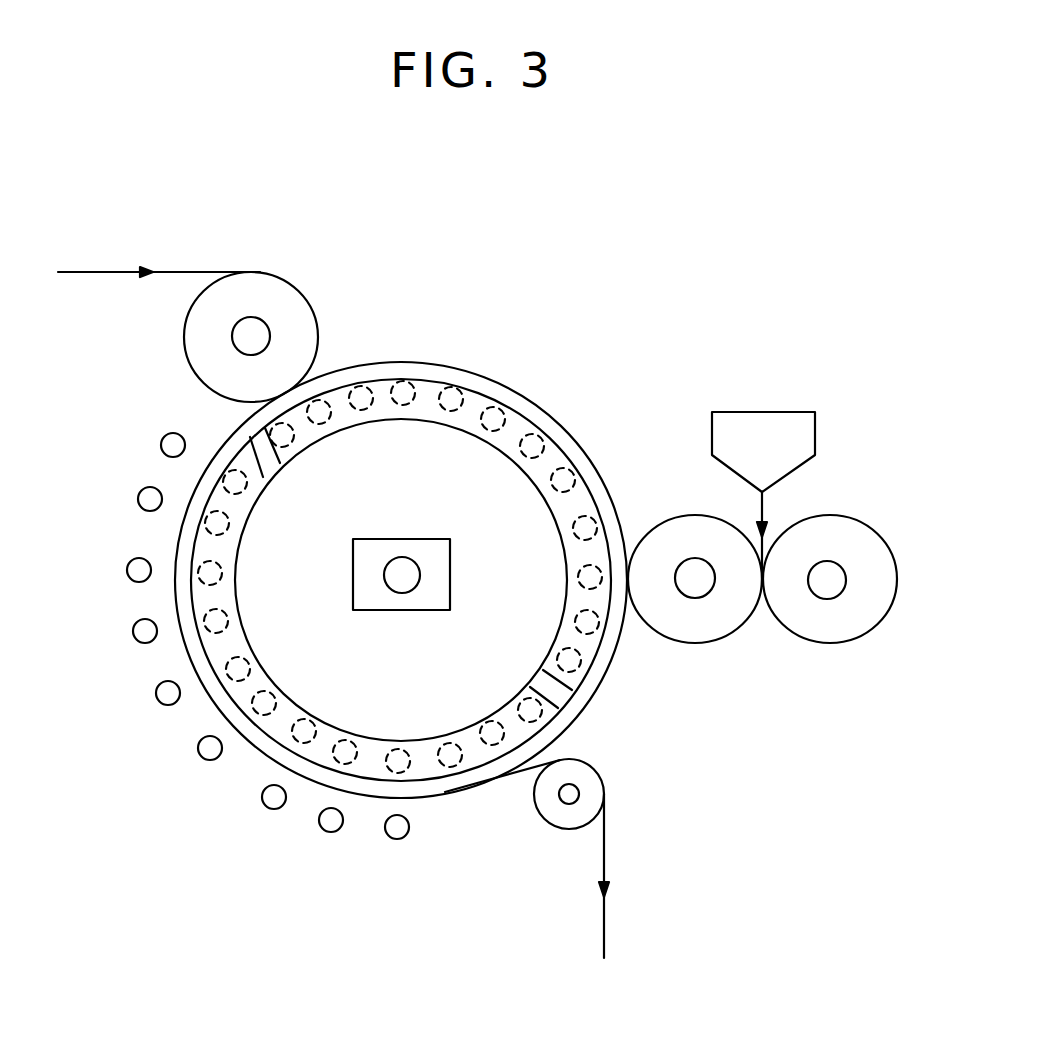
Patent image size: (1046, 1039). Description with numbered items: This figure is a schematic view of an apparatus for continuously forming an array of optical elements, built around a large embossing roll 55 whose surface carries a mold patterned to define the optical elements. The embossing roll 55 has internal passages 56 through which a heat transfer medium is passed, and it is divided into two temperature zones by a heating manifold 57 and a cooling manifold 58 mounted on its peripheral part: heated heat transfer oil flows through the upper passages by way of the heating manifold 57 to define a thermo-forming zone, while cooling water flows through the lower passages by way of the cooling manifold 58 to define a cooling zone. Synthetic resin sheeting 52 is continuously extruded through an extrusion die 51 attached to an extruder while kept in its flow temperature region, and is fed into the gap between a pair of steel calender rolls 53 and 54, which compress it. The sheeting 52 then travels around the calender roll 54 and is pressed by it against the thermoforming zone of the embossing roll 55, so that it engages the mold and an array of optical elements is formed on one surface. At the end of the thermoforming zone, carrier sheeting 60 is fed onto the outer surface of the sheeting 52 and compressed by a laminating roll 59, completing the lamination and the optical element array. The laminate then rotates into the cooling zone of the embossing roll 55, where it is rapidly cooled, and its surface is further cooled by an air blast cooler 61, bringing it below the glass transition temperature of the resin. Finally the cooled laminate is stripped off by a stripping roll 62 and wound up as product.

The extrusion die 51 is at (795, 437).
The synthetic resin sheeting 52 is at (813, 536).
The calender roll 53 is at (849, 609).
The calender roll 54 is at (712, 609).
The embossing roll 55 is at (489, 442).
The internal passages 56 is at (347, 577).
The heating manifold 57 is at (401, 567).
The cooling manifold 58 is at (320, 595).
The laminating roll 59 is at (287, 332).
The carrier sheeting 60 is at (159, 251).
The air blast cooler 61 is at (268, 638).
The stripping roll 62 is at (563, 849).